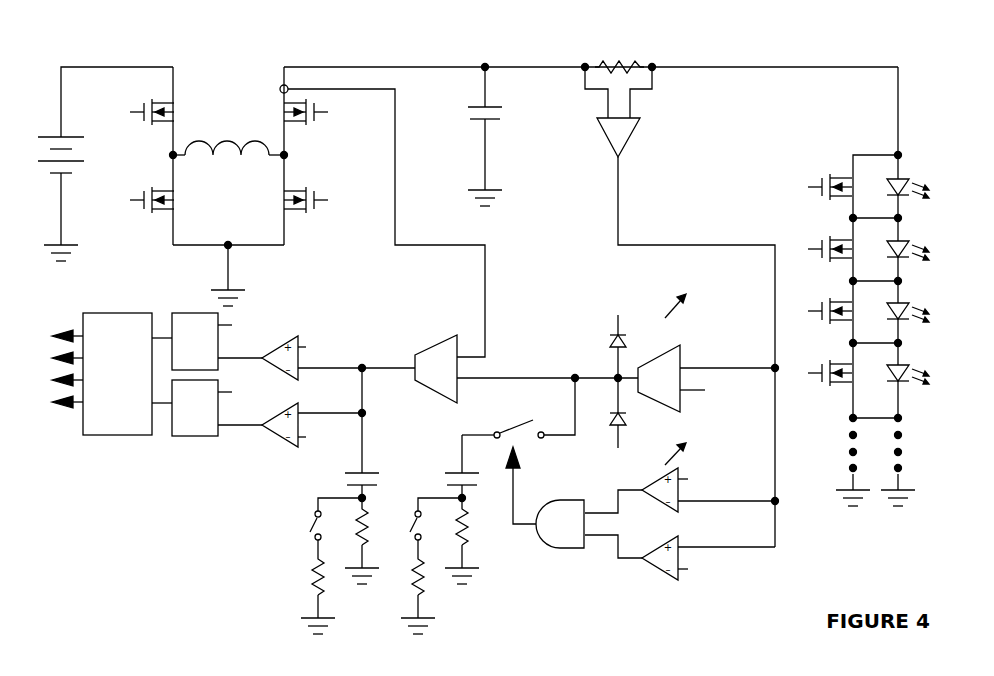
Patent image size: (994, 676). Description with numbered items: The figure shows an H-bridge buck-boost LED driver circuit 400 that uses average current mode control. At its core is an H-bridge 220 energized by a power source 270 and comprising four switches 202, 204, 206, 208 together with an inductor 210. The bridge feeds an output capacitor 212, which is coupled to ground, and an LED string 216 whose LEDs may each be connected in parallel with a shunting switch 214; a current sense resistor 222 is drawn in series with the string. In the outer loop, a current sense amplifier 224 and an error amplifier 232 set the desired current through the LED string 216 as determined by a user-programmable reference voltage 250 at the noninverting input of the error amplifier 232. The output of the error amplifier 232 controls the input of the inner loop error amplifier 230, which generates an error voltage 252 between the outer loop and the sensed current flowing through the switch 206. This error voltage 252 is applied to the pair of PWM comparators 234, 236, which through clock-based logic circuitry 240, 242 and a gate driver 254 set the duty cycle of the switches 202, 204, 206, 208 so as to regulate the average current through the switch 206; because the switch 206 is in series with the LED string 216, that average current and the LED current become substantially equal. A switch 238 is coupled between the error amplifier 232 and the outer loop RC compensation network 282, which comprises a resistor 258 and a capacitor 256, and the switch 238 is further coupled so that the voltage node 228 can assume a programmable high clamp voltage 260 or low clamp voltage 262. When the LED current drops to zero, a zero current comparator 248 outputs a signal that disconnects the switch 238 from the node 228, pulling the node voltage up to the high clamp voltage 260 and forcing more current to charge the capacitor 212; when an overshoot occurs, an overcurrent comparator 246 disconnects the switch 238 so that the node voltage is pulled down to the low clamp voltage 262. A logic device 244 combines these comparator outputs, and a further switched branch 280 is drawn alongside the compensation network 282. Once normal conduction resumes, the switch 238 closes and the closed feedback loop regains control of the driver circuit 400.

The H-bridge buck-boost LED driver circuit 400 is at (488, 38).
The H-bridge 220 is at (198, 72).
The power source 270 is at (57, 135).
The switch 202 is at (137, 121).
The switch 204 is at (137, 209).
The switch 206 is at (326, 118).
The switch 208 is at (326, 207).
The inductor 210 is at (229, 143).
The output capacitor 212 is at (480, 125).
The current sense resistor RCSLED 222 is at (593, 63).
The current sense amplifier 224 is at (636, 138).
The LED string 216 is at (927, 148).
The shunting switch 214 is at (812, 182).
The gate driver 254 is at (80, 312).
The clock-based logic circuitry 240 is at (170, 317).
The clock-based logic circuitry 242 is at (170, 434).
The PWM comparator 234 is at (293, 335).
The PWM comparator 236 is at (280, 440).
The error voltage 252 is at (375, 345).
The capacitor 256 is at (443, 478).
The resistor 258 is at (478, 528).
The switched resistor branch 280 is at (493, 600).
The RC compensation network 282 is at (283, 503).
The switch 238 is at (515, 426).
The error amplifier 230 is at (430, 338).
The voltage node 228 is at (525, 362).
The high clamp voltage 260 is at (600, 318).
The low clamp voltage 262 is at (605, 465).
The error amplifier 232 is at (683, 410).
The reference voltage 250 is at (735, 396).
The overcurrent comparator 246 is at (655, 505).
The zero current comparator 248 is at (652, 578).
The logic device 244 is at (570, 550).